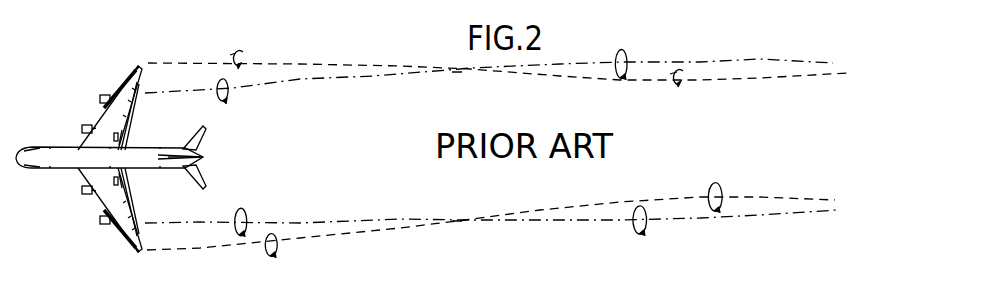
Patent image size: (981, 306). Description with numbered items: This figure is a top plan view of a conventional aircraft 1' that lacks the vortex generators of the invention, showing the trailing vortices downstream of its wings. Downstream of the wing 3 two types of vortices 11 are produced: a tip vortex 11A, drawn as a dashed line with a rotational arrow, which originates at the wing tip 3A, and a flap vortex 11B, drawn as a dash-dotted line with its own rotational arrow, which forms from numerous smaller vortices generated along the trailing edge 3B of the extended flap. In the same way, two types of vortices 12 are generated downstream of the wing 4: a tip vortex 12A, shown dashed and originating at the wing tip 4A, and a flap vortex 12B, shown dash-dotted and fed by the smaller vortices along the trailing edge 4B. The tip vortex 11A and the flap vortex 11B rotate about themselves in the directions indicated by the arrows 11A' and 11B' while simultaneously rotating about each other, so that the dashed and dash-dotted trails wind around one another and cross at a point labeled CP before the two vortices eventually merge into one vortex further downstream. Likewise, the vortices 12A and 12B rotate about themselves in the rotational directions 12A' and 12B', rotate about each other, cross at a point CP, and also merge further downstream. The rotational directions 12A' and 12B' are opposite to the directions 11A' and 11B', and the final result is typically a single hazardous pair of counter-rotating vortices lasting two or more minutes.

The conventional aircraft 1' is at (111, 164).
The wing 3 is at (107, 197).
The wing tip 3A is at (139, 254).
The trailing edge 3B is at (123, 202).
The wing 4 is at (108, 118).
The wing tip 4A is at (140, 64).
The trailing edge 4B is at (123, 123).
The vortices 11 is at (400, 211).
The tip vortex 11A is at (298, 259).
The flap vortex 11B is at (268, 211).
The rotational direction arrow 11A' is at (745, 188).
The rotational direction arrow 11B' is at (614, 237).
The vortices 12 is at (383, 56).
The tip vortex 12A is at (269, 49).
The flap vortex 12B is at (258, 102).
The rotational direction 12A' is at (709, 94).
The rotational direction 12B' is at (653, 51).
The crossing point of vortex trails CP is at (457, 74).